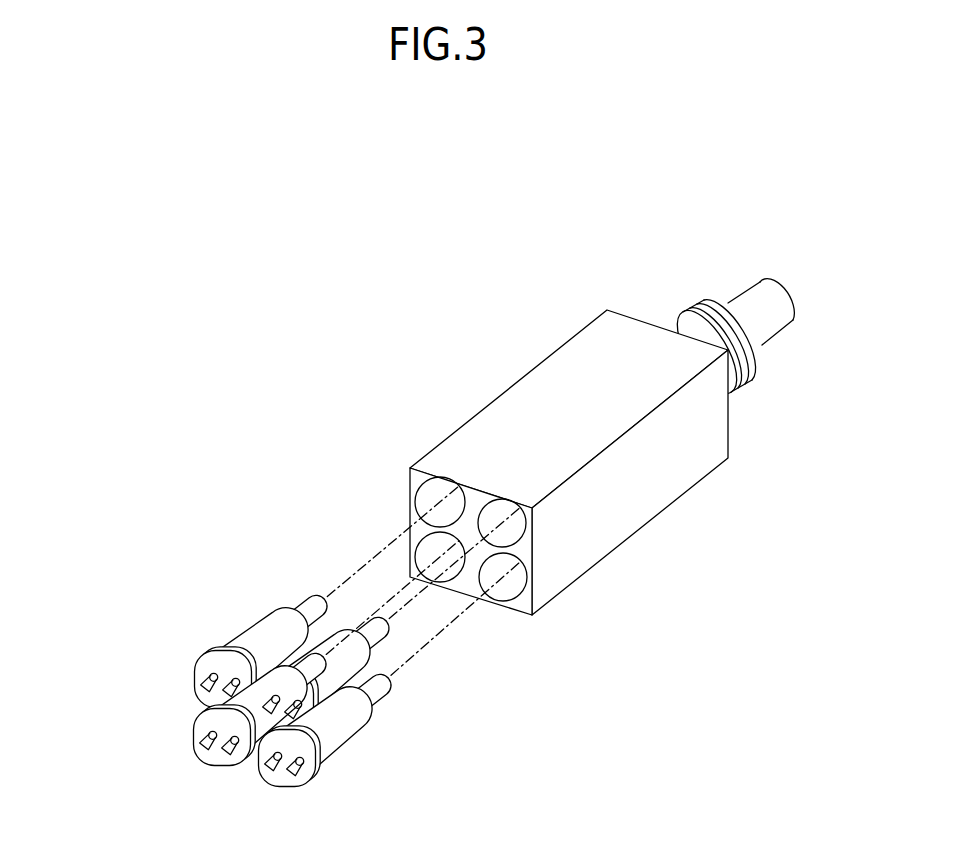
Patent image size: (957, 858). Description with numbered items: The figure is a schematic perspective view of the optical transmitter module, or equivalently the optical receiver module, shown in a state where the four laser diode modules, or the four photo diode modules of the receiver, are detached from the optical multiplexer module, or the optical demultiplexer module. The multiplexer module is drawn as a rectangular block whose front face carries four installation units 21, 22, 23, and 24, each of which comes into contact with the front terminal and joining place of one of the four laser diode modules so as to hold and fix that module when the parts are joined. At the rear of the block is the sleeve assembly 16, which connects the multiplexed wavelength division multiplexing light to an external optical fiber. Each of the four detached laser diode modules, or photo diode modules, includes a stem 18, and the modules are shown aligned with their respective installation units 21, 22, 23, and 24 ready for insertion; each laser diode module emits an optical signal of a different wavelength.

The sleeve assembly 16 is at (708, 290).
The installation unit 21 is at (515, 532).
The installation unit 22 is at (497, 571).
The installation unit 23 is at (432, 548).
The installation unit 24 is at (428, 504).
The stem 18 is at (225, 660).